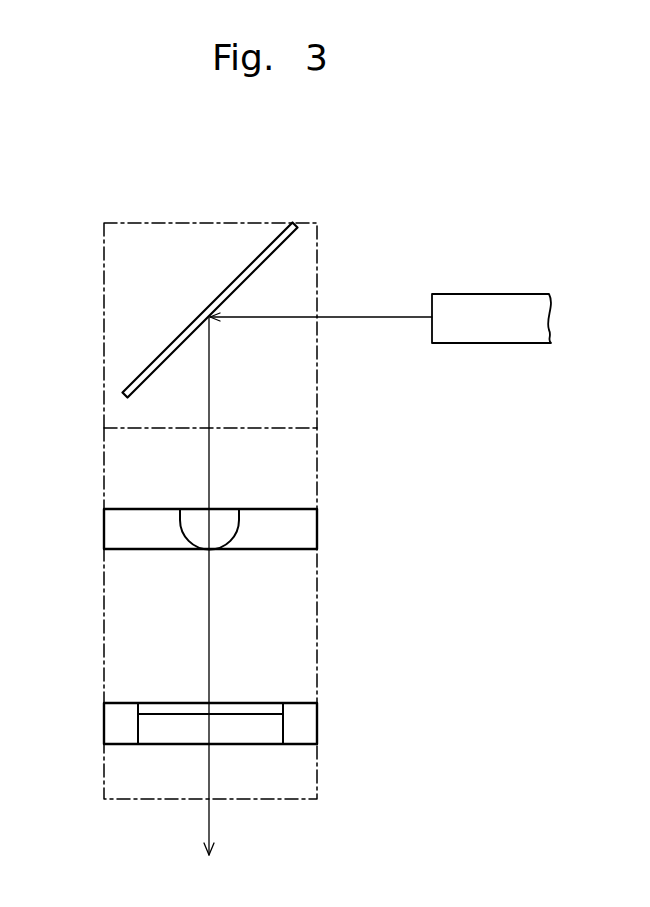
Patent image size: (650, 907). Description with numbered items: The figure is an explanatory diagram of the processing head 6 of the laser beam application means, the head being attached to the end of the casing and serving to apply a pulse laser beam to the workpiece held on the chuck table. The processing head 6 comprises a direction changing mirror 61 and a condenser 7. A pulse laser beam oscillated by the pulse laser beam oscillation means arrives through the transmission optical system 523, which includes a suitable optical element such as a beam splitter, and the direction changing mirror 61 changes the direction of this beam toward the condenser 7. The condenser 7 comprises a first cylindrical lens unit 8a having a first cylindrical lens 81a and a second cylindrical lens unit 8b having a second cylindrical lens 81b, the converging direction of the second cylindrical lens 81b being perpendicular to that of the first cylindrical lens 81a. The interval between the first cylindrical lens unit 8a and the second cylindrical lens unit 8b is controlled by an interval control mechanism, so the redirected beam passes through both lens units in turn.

The processing head 6 is at (80, 262).
The condenser 7 is at (82, 468).
The direction changing mirror 61 is at (248, 263).
The transmission optical system 523 is at (502, 302).
The first cylindrical lens unit 8a is at (103, 530).
The first cylindrical lens 81a is at (225, 513).
The second cylindrical lens unit 8b is at (103, 726).
The second cylindrical lens 81b is at (247, 707).